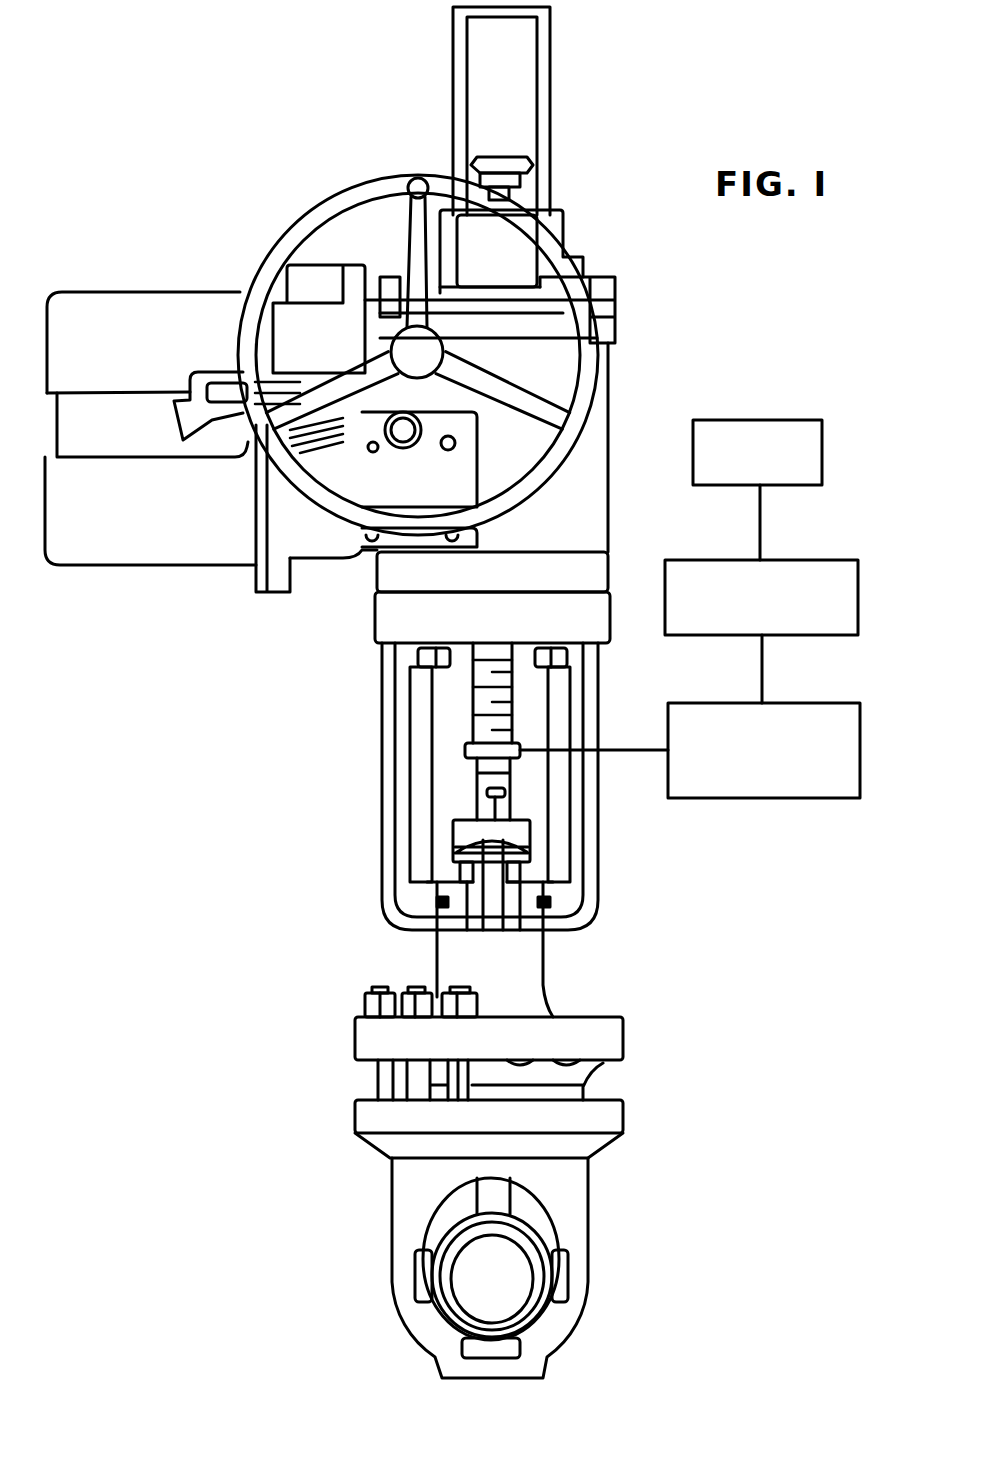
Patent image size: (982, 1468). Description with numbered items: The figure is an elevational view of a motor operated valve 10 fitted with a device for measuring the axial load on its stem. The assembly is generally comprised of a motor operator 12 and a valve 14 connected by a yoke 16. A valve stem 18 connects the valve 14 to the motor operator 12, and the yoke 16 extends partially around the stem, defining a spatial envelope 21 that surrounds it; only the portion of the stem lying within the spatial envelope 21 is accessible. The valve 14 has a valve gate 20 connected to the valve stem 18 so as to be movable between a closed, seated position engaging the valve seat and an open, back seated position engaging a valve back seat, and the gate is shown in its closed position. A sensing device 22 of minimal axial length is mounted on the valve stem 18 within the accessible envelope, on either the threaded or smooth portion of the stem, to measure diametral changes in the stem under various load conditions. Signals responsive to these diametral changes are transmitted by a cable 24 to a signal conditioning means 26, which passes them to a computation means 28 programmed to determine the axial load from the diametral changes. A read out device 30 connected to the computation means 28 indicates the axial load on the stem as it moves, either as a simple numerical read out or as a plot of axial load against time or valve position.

The motor operated valve 10 is at (446, 784).
The motor operator 12 is at (108, 570).
The valve 14 is at (392, 1272).
The yoke 16 is at (382, 740).
The valve stem 18 is at (473, 730).
The valve gate 20 is at (452, 1308).
The spatial envelope 21 is at (459, 798).
The sensing device 22 is at (517, 745).
The cable 24 is at (633, 750).
The signal conditioning means 26 is at (806, 703).
The computation means 28 is at (792, 560).
The read out device 30 is at (760, 420).